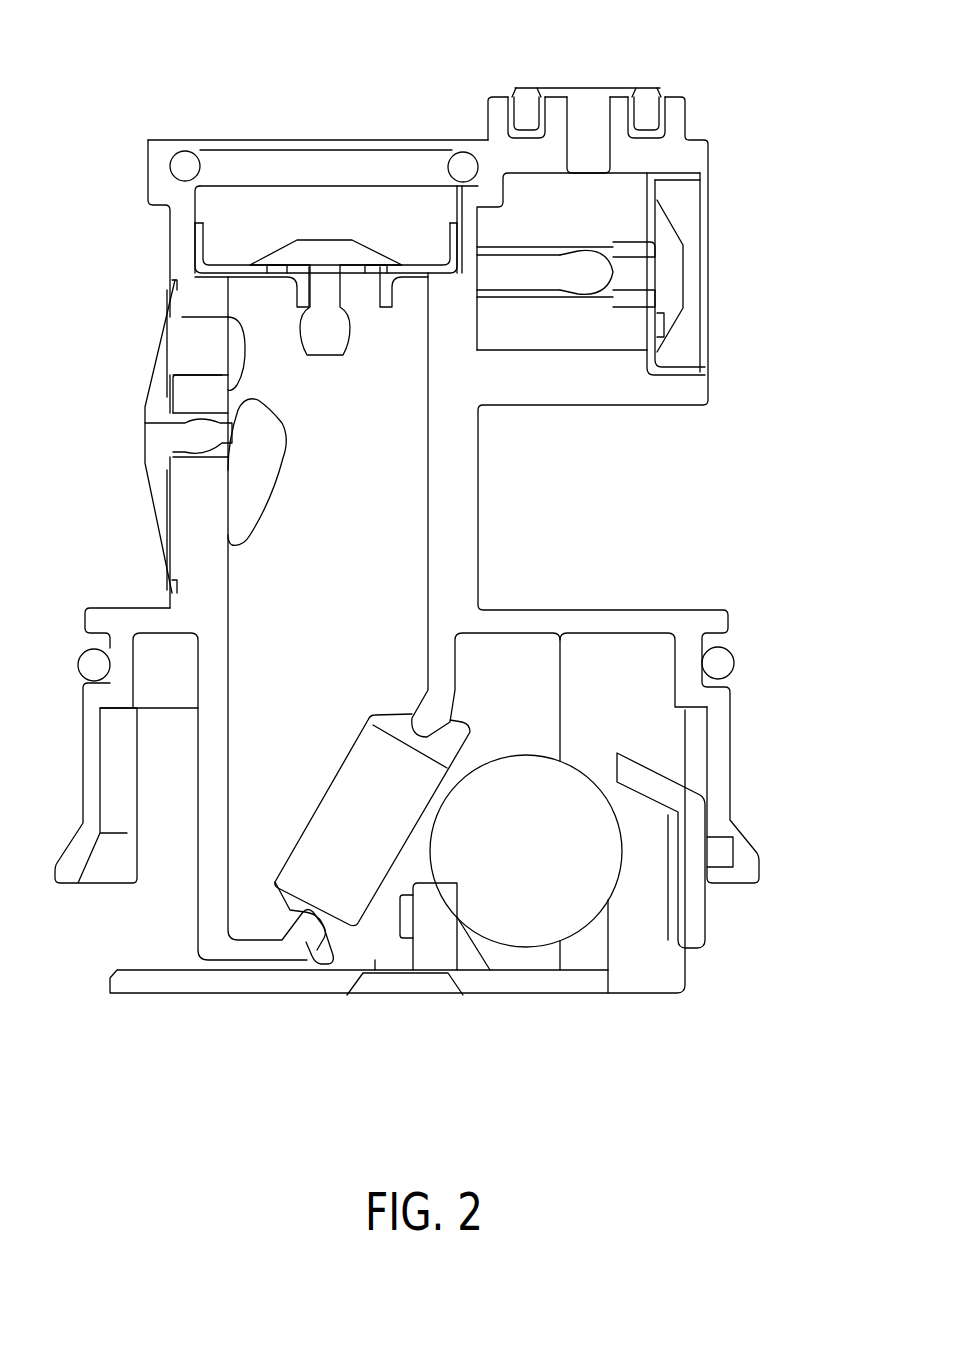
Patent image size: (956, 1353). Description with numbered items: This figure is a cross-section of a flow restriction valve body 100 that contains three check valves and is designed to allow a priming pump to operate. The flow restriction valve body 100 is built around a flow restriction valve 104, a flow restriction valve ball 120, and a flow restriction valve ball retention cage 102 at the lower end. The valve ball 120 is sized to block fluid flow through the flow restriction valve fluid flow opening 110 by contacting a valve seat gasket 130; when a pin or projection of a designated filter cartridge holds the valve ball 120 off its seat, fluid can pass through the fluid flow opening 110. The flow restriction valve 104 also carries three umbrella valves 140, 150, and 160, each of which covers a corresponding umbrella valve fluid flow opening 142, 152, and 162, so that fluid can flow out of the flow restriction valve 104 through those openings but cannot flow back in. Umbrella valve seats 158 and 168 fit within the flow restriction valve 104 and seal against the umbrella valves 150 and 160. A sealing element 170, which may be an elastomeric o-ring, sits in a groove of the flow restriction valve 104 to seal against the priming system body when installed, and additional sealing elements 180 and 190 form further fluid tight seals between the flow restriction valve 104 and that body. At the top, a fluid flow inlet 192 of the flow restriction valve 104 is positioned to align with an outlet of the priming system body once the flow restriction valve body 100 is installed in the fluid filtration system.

The flow restriction valve body 100 is at (435, 539).
The flow restriction valve ball retention cage 102 is at (645, 972).
The flow restriction valve 104 is at (407, 529).
The flow restriction valve fluid flow opening 110 is at (346, 811).
The flow restriction valve ball 120 is at (503, 917).
The valve seat gasket 130 is at (333, 938).
The umbrella valve 140 is at (145, 440).
The umbrella valve fluid flow opening 142 is at (186, 348).
The umbrella valve 150 is at (323, 257).
The umbrella valve fluid flow opening 152 is at (379, 262).
The umbrella valve seat 158 is at (212, 247).
The umbrella valve 160 is at (672, 257).
The umbrella valve fluid flow opening 162 is at (666, 325).
The umbrella valve seat 168 is at (682, 358).
The sealing element 170 is at (727, 662).
The sealing element 180 is at (182, 160).
The sealing element 190 is at (657, 103).
The fluid flow inlet 192 is at (596, 110).